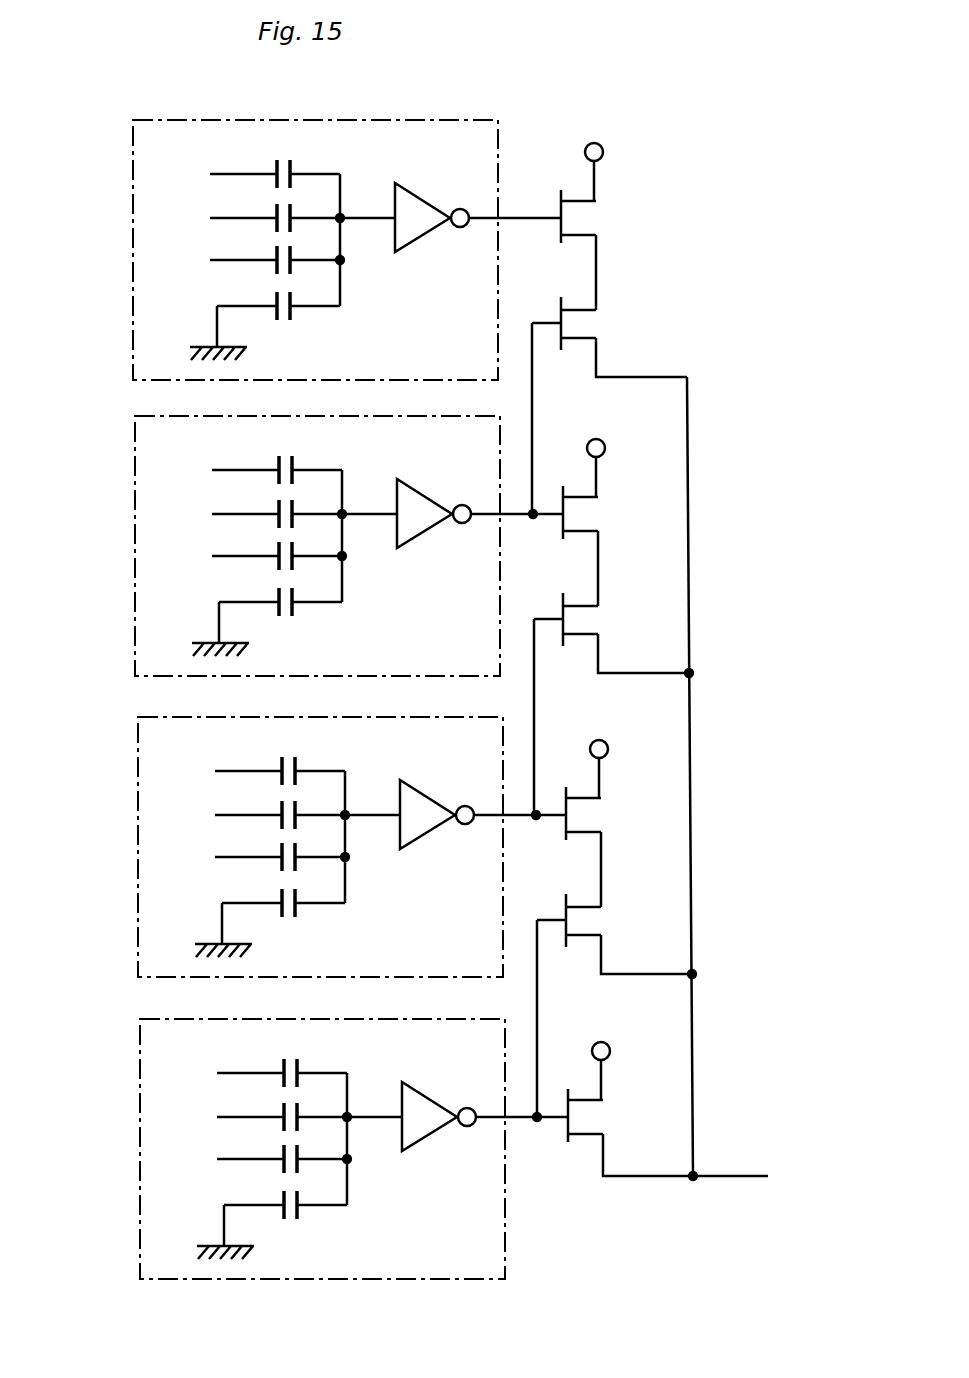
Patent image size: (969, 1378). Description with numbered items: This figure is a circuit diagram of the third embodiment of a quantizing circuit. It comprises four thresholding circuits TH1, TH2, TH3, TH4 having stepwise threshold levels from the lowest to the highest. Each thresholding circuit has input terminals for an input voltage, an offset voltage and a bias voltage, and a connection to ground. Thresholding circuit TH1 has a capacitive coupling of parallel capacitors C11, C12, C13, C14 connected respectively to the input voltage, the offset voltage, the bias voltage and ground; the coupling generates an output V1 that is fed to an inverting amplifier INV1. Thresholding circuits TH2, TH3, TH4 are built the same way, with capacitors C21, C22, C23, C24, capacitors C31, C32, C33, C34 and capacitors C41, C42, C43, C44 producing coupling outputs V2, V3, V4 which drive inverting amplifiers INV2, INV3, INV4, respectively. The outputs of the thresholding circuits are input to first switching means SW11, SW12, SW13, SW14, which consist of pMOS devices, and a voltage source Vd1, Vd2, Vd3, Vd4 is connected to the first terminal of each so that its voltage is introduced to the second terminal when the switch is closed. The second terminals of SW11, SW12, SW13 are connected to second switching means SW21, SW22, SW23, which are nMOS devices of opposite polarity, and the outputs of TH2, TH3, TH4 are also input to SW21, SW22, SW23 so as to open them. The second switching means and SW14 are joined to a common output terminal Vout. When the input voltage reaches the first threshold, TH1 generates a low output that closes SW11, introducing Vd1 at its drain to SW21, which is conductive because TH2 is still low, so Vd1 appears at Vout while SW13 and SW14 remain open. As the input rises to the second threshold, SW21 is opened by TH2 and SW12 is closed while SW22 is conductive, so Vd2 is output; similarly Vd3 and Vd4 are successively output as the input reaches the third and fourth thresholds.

The thresholding circuit TH1 is at (133, 132).
The thresholding circuit TH2 is at (267, 539).
The thresholding circuit TH3 is at (270, 840).
The thresholding circuit TH4 is at (272, 1142).
The capacitor C11 is at (281, 165).
The capacitor C12 is at (281, 208).
The capacitor C13 is at (281, 250).
The capacitor C14 is at (265, 317).
The capacitor C21 is at (283, 461).
The capacitor C22 is at (283, 504).
The capacitor C23 is at (283, 546).
The capacitor C24 is at (267, 613).
The capacitor C31 is at (286, 762).
The capacitor C32 is at (286, 805).
The capacitor C33 is at (286, 847).
The capacitor C34 is at (270, 914).
The capacitor C41 is at (288, 1064).
The capacitor C42 is at (288, 1107).
The capacitor C43 is at (288, 1149).
The capacitor C44 is at (272, 1216).
The inverting amplifier INV1 is at (478, 209).
The inverting amplifier INV2 is at (480, 505).
The inverting amplifier INV3 is at (483, 806).
The inverting amplifier INV4 is at (485, 1108).
The capacitive coupling output V1 is at (366, 240).
The capacitive coupling output V2 is at (368, 536).
The capacitive coupling output V3 is at (371, 837).
The capacitive coupling output V4 is at (373, 1139).
The voltage source Vd1 is at (598, 154).
The voltage source Vd2 is at (600, 450).
The voltage source Vd3 is at (603, 751).
The voltage source Vd4 is at (605, 1053).
The first switching means SW11 is at (618, 250).
The first switching means SW12 is at (620, 546).
The first switching means SW13 is at (623, 847).
The first switching means SW14 is at (630, 1132).
The second switching means SW21 is at (609, 405).
The second switching means SW22 is at (614, 703).
The second switching means SW23 is at (617, 1005).
The common output terminal Vout is at (761, 1173).